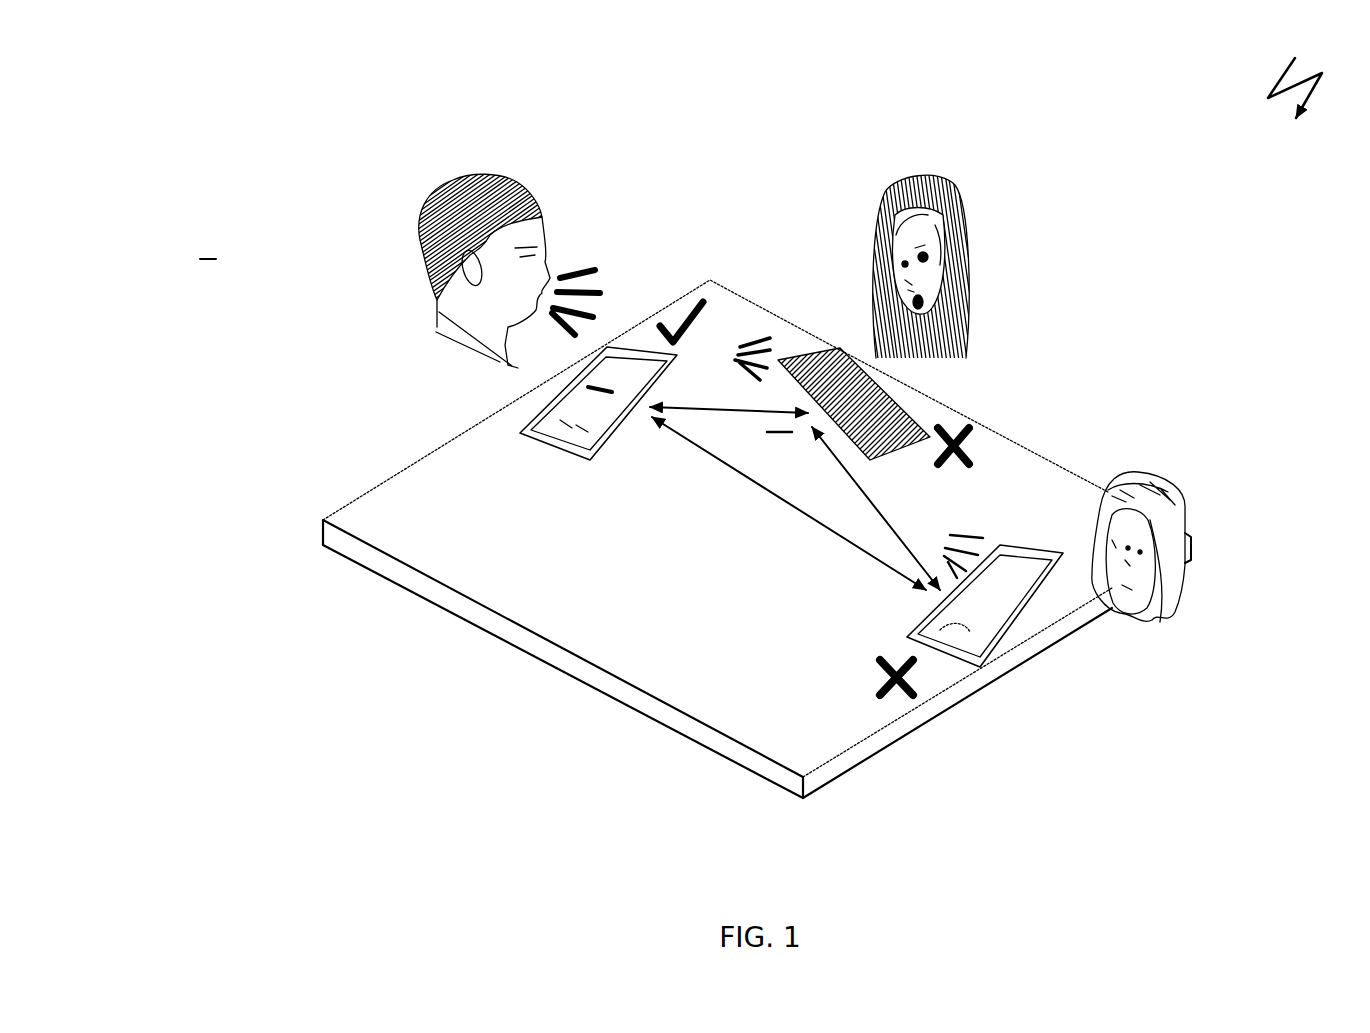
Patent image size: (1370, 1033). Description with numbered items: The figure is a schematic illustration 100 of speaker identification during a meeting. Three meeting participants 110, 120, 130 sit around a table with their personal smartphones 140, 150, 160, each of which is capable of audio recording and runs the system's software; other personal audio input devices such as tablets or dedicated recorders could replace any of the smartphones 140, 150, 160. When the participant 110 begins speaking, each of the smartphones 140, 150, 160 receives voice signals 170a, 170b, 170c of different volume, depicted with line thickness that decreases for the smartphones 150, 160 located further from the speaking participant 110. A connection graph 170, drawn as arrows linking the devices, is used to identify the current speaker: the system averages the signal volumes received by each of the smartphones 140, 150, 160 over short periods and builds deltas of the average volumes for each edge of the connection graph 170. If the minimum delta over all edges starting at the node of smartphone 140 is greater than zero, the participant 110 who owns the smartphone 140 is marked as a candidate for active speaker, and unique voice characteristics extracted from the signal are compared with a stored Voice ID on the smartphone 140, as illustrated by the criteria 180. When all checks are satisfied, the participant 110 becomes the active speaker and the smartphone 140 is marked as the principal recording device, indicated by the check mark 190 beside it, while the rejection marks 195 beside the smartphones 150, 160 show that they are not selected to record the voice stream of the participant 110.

The schematic illustration 100 is at (1295, 72).
The meeting participant 110 is at (480, 167).
The meeting participant 120 is at (903, 166).
The meeting participant 130 is at (1197, 503).
The personal smartphone 140 is at (528, 407).
The personal smartphone 150 is at (853, 348).
The personal smartphone 160 is at (1013, 630).
The connection graph 170 is at (700, 455).
The voice signal 170a is at (572, 257).
The voice signal 170b is at (758, 333).
The voice signal 170c is at (977, 522).
The criteria 180 is at (178, 247).
The selected device indicator (check mark) 190 is at (685, 306).
The rejected device indicator (X mark) 195 is at (957, 425).